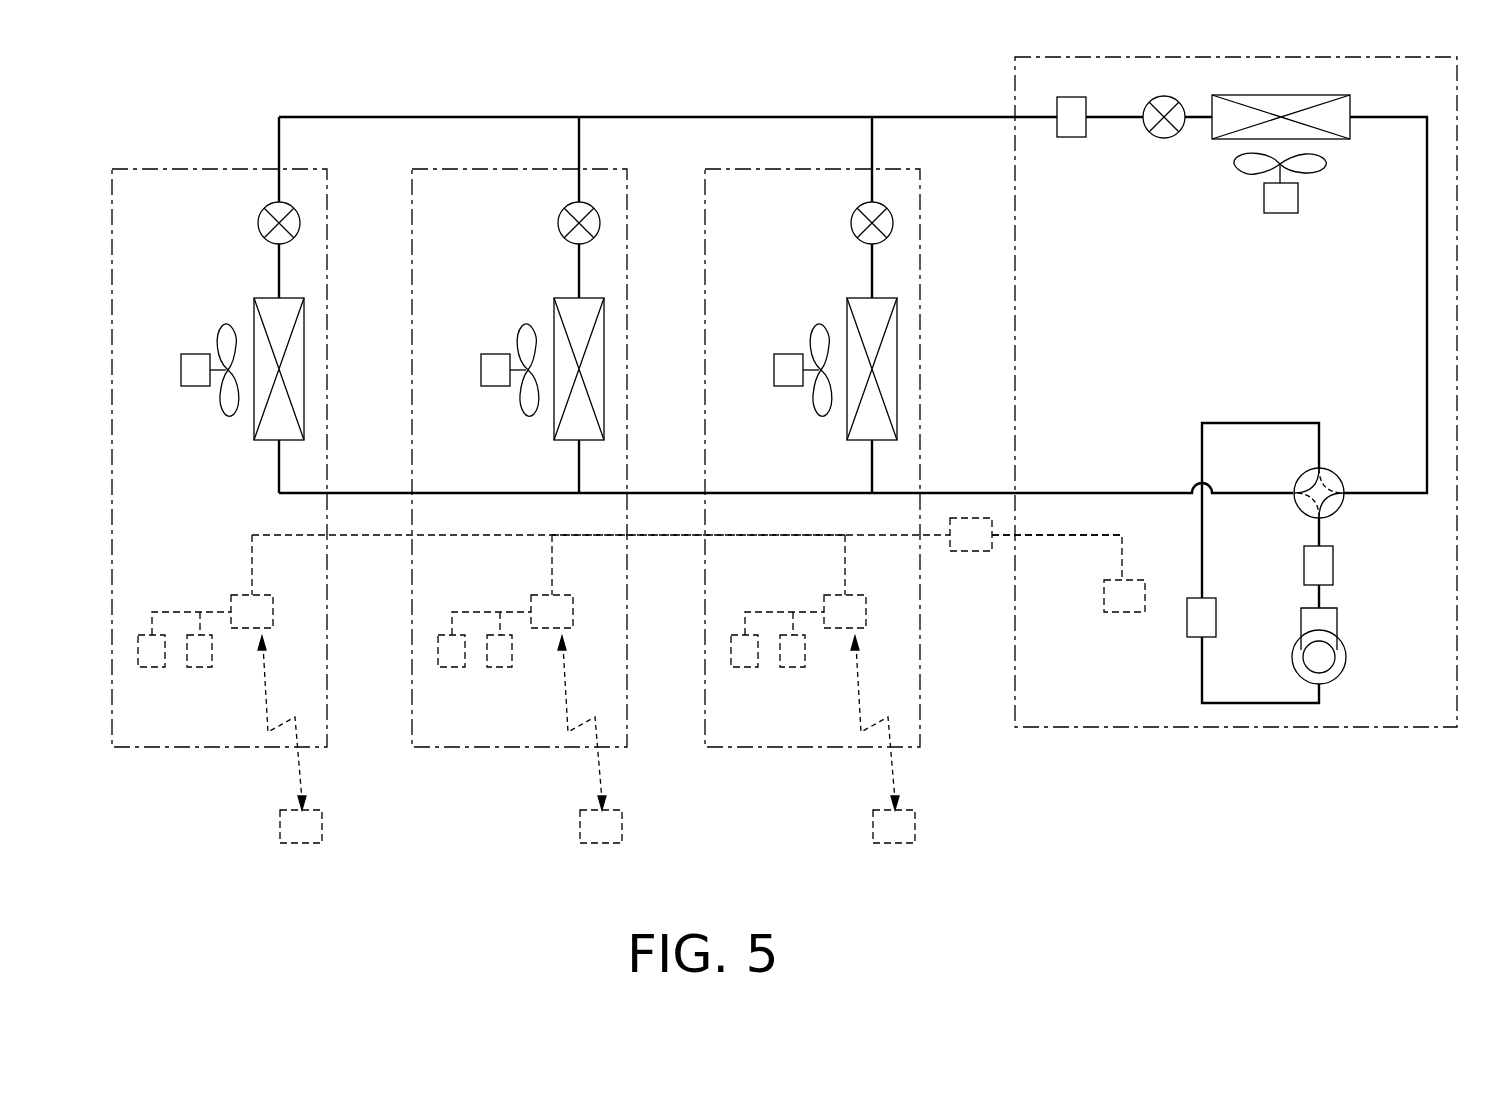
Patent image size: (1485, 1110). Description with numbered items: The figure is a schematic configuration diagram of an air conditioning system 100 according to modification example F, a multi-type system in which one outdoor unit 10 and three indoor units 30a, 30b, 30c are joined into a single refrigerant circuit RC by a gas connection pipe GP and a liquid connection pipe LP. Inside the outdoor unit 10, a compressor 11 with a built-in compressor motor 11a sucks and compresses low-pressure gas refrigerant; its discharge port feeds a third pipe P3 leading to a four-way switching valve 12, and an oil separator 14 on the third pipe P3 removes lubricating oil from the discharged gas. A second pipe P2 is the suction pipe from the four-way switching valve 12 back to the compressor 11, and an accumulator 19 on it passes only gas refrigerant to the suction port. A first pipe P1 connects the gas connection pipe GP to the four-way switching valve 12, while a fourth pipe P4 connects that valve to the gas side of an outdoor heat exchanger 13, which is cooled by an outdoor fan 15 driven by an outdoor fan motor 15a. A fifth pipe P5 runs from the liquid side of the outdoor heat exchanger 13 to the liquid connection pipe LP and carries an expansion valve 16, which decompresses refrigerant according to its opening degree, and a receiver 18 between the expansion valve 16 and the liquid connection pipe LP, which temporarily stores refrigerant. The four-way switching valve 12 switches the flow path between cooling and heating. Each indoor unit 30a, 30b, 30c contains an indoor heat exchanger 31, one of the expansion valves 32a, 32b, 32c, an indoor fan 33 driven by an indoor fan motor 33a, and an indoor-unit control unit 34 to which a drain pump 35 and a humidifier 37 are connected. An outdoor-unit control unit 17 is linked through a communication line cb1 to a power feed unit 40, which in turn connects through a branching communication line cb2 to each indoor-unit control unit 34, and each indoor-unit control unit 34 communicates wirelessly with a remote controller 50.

The air conditioning system 100 is at (1292, 822).
The outdoor unit 10 is at (1213, 727).
The compressor 11 is at (1337, 620).
The compressor motor 11a is at (1330, 657).
The four-way switching valve 12 is at (1300, 510).
The outdoor heat exchanger 13 is at (1352, 128).
The oil separator 14 is at (1304, 570).
The outdoor fan 15 is at (1318, 165).
The outdoor fan motor 15a is at (1270, 200).
The expansion valve 16 is at (1165, 138).
The outdoor-unit control unit 17 is at (1122, 612).
The receiver 18 is at (1072, 137).
The accumulator 19 is at (1187, 618).
The indoor unit 30a is at (809, 747).
The indoor unit 30b is at (516, 747).
The indoor unit 30c is at (216, 747).
The indoor heat exchanger 31 is at (256, 432).
The expansion valve 32a is at (851, 230).
The expansion valve 32b is at (558, 230).
The expansion valve 32c is at (258, 230).
The indoor fan 33 is at (225, 330).
The indoor fan motor 33a is at (188, 372).
The indoor-unit control unit 34 is at (231, 600).
The drain pump 35 is at (152, 668).
The humidifier 37 is at (200, 668).
The power feed unit 40 is at (970, 551).
The remote controller 50 is at (322, 827).
The liquid connection pipe LP is at (960, 117).
The gas connection pipe GP is at (960, 493).
The first pipe P1 is at (1125, 493).
The second pipe P2 is at (1250, 703).
The third pipe P3 is at (1317, 532).
The fourth pipe P4 is at (1427, 396).
The fifth pipe P5 is at (1113, 117).
The refrigerant circuit RC is at (1375, 505).
The communication line cb1 is at (1068, 537).
The communication line cb2 is at (668, 537).